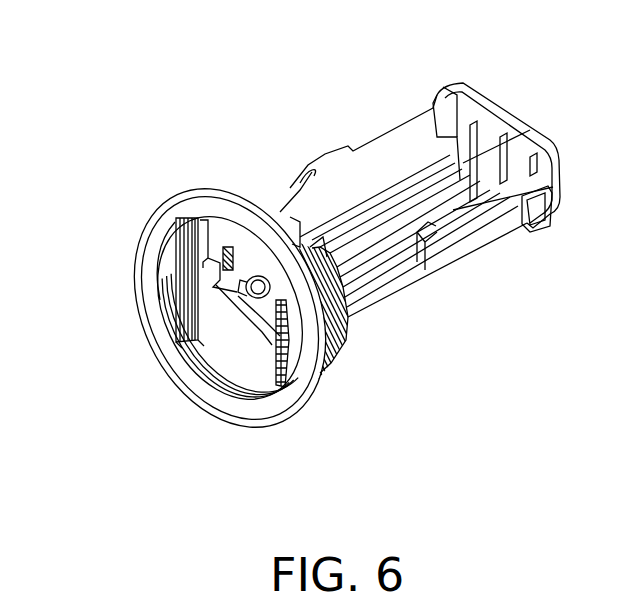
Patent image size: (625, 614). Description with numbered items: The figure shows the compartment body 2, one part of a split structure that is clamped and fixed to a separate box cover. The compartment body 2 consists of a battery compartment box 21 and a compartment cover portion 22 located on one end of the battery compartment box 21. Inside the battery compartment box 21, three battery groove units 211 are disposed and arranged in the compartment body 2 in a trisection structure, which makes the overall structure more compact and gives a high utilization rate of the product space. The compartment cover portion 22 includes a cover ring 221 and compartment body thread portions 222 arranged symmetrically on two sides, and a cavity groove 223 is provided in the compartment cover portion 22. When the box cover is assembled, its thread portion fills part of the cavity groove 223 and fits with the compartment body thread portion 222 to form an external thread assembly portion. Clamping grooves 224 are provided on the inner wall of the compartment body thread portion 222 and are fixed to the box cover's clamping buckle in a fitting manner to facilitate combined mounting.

The compartment body 2 is at (198, 155).
The battery compartment box 21 is at (357, 149).
The battery groove unit 211 is at (468, 222).
The compartment cover portion 22 is at (244, 200).
The cover ring 221 is at (140, 272).
The compartment body thread portion 222 is at (331, 362).
The cavity groove 223 is at (238, 292).
The clamping groove 224 is at (201, 338).